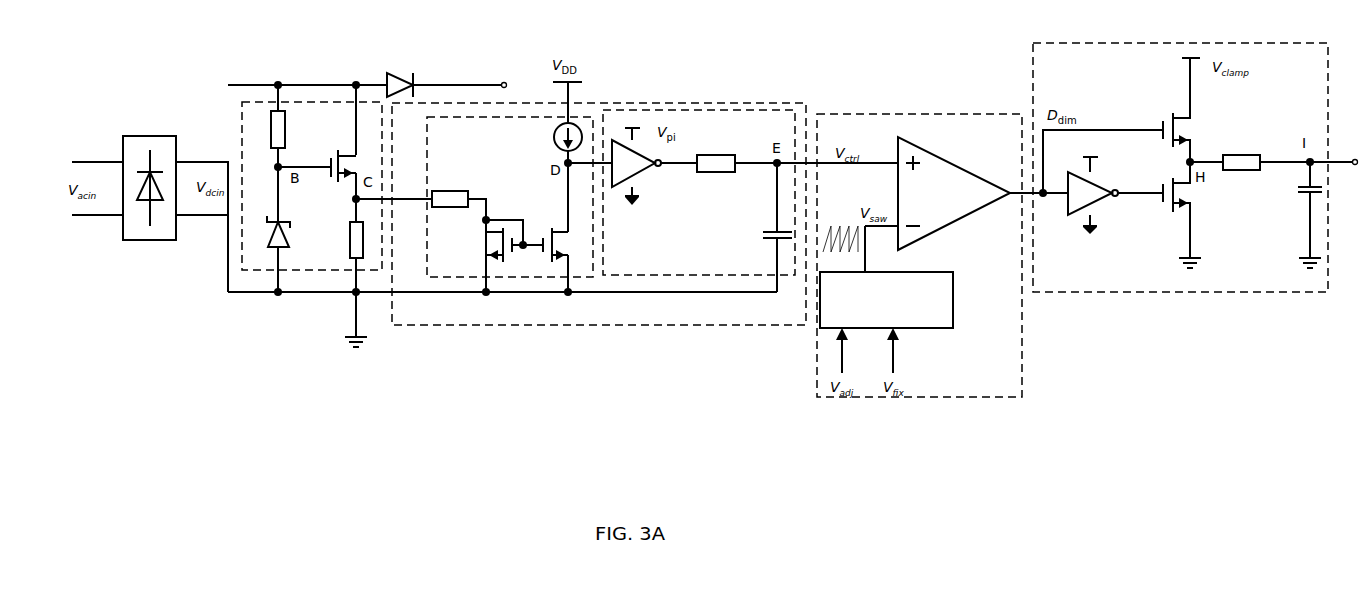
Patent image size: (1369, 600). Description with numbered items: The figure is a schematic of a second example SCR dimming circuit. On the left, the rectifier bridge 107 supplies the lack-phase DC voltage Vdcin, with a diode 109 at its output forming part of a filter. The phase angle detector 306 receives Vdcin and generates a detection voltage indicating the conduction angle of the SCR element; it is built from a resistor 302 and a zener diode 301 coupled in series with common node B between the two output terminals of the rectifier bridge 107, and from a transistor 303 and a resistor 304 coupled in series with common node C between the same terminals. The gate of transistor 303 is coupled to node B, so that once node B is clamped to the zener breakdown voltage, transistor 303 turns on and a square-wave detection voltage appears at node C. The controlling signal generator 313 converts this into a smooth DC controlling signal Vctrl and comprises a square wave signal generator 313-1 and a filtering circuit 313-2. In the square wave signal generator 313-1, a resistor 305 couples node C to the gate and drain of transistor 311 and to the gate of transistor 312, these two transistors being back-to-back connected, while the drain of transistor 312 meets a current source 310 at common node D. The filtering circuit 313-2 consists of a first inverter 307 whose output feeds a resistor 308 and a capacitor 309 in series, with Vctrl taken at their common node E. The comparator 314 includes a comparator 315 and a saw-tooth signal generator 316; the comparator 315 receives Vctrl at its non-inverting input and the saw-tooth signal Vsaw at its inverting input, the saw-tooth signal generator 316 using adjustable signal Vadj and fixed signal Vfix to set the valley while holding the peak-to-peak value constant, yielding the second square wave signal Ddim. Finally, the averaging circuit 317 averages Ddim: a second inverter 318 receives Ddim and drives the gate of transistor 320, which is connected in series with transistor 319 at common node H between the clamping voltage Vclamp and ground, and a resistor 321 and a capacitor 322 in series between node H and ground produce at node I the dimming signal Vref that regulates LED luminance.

The rectifier bridge 107 is at (141, 143).
The diode 109 is at (399, 78).
The zener diode 301 is at (283, 242).
The resistor 302 is at (283, 138).
The transistor 303 is at (344, 145).
The resistor 304 is at (350, 236).
The resistor 305 is at (440, 197).
The phase angle detector 306 is at (254, 271).
The first inverter 307 is at (657, 167).
The resistor 308 is at (706, 173).
The capacitor 309 is at (763, 233).
The current source 310 is at (554, 136).
The transistor 311 is at (510, 240).
The transistor 312 is at (556, 236).
The controlling signal generator 313 is at (717, 103).
The square wave signal generator 313-1 is at (510, 197).
The filtering circuit 313-2 is at (699, 192).
The comparator 314 is at (965, 114).
The comparator 315 is at (954, 193).
The saw-tooth signal generator 316 is at (945, 311).
The averaging circuit 317 is at (1248, 43).
The second inverter 318 is at (1098, 198).
The transistor 319 is at (1176, 128).
The transistor 320 is at (1184, 200).
The resistor 321 is at (1231, 171).
The capacitor 322 is at (1306, 189).